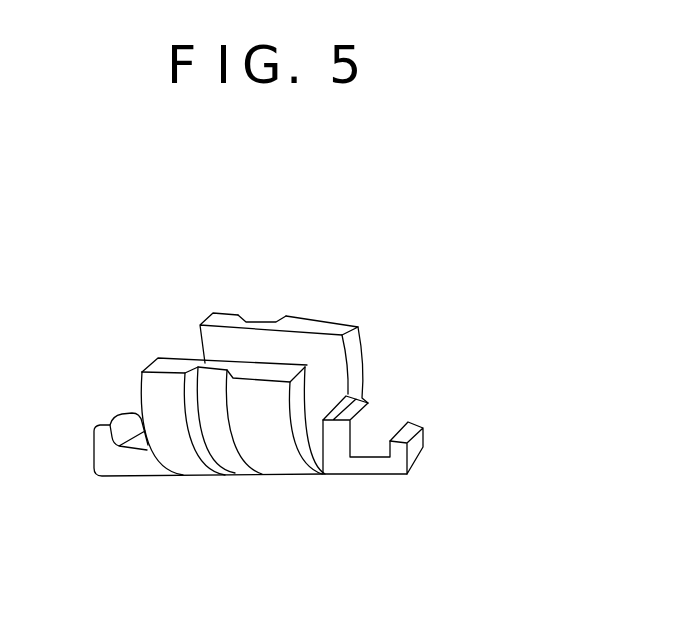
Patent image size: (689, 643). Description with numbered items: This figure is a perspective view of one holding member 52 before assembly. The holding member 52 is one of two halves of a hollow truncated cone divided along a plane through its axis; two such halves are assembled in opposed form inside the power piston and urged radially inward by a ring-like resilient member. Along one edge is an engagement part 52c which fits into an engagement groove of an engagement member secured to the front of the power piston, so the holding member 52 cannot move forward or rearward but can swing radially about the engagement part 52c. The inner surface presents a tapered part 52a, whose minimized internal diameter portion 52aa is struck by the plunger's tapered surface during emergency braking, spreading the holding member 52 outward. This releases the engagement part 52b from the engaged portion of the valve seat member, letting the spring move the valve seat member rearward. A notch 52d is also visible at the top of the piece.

The holding member 52 is at (369, 307).
The tapered part 52a is at (360, 410).
The minimized internal diameter portion 52aa is at (332, 422).
The engagement part 52b is at (422, 427).
The engagement part 52c is at (122, 428).
The top notch 52d is at (261, 318).